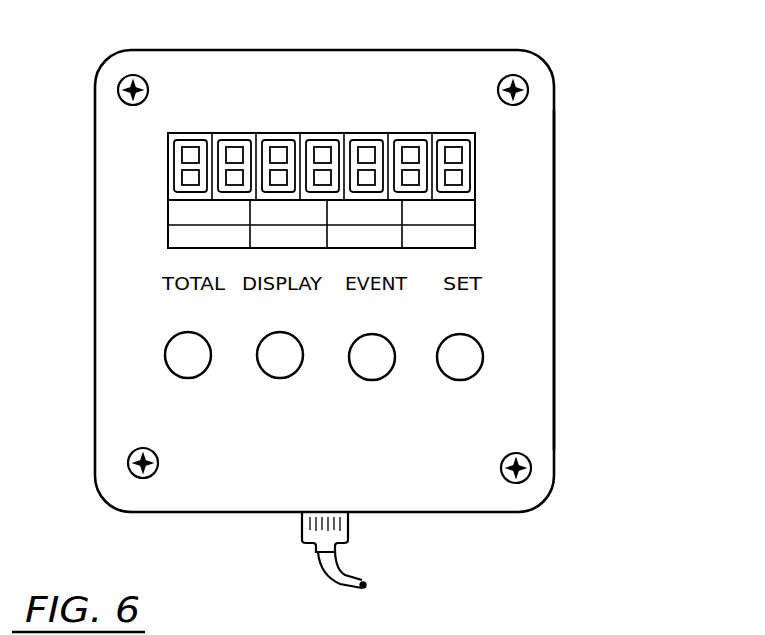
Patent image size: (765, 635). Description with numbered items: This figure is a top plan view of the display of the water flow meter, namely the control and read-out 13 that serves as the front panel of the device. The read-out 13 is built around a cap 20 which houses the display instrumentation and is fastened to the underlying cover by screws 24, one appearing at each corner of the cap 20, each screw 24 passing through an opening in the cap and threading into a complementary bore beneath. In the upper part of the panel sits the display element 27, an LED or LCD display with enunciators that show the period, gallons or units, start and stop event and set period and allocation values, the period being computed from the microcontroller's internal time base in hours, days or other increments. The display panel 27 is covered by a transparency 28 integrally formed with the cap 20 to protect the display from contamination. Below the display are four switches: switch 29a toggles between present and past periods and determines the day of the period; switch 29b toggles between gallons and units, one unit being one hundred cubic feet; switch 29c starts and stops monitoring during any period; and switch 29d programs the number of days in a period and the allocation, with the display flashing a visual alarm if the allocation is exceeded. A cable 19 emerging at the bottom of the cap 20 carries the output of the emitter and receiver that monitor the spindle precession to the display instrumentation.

The control and read-out 13 is at (555, 181).
The cable 19 is at (341, 569).
The cap 20 is at (318, 50).
The screws 24 is at (531, 470).
The display element 27 is at (447, 133).
The transparency 28 is at (168, 207).
The switch 29a is at (172, 355).
The switch 29b is at (270, 357).
The switch 29c is at (385, 365).
The switch 29d is at (473, 360).